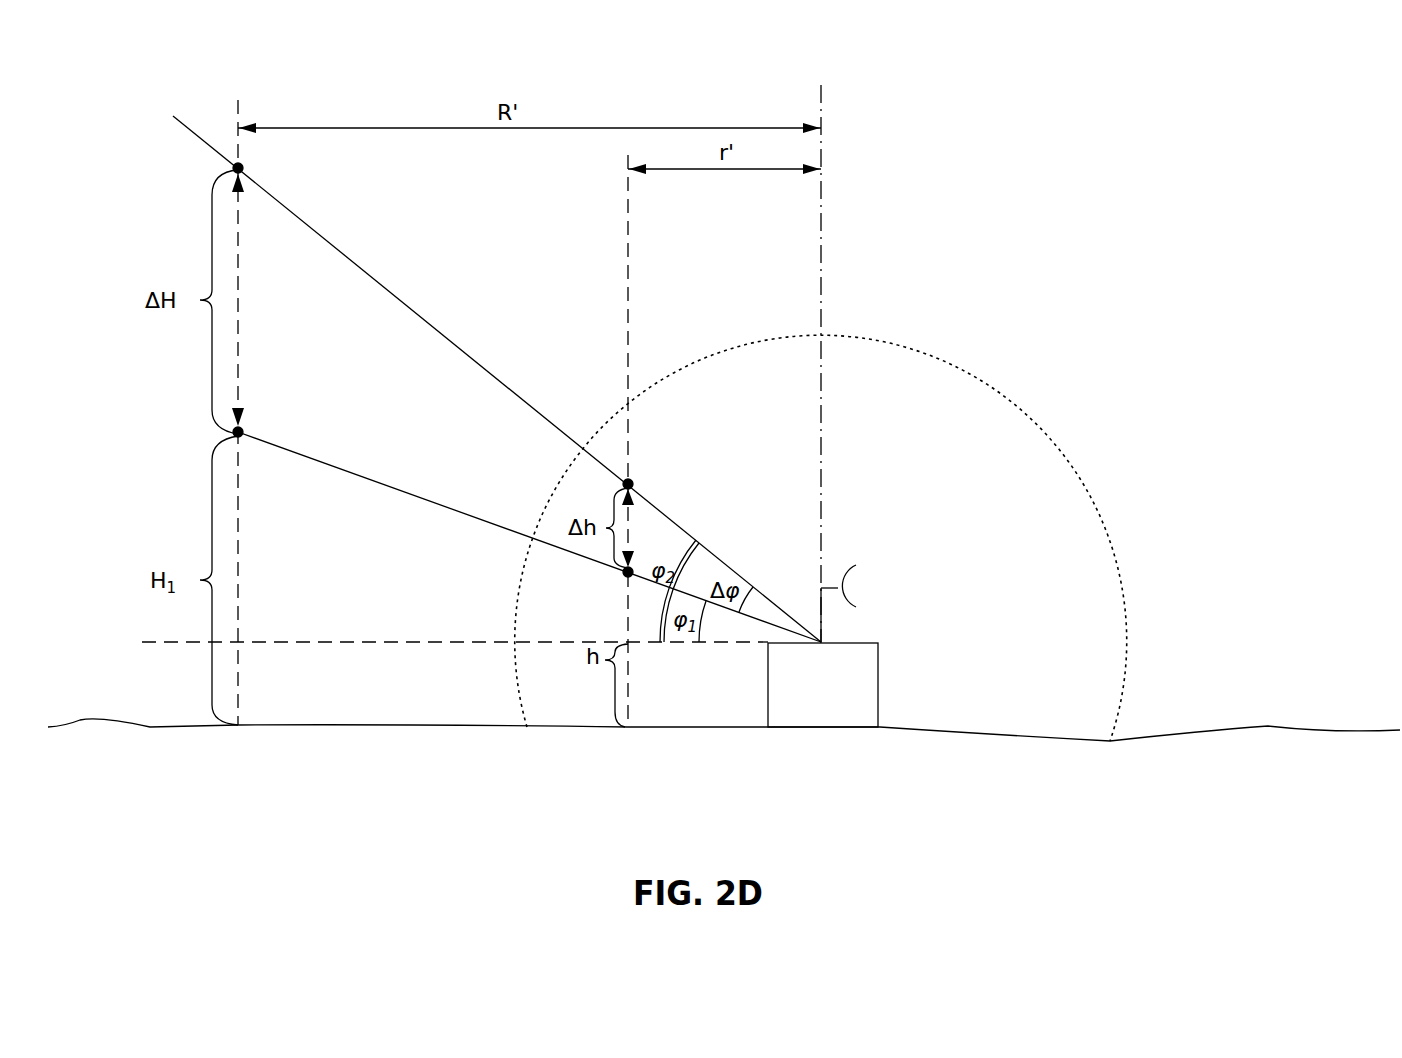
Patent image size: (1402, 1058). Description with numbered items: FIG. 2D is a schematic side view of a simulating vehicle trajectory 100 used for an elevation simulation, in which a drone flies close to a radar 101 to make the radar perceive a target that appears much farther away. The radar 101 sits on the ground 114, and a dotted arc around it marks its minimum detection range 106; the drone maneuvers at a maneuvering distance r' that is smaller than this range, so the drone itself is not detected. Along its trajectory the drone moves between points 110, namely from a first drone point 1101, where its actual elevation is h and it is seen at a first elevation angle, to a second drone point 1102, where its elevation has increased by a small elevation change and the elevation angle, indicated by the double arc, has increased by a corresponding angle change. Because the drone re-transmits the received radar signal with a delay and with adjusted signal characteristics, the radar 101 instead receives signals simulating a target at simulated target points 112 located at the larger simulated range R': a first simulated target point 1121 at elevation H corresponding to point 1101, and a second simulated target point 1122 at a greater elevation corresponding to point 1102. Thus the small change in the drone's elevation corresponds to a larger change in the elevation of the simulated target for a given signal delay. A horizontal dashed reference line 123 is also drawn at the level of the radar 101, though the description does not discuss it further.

The simulating vehicle trajectory 100 is at (1112, 168).
The radar 101 is at (879, 668).
The minimum detection range 106 is at (520, 582).
The points of the drone trajectory 110 is at (626, 531).
The first drone point 1101 is at (621, 576).
The second drone point 1102 is at (636, 484).
The simulated target points 112 is at (282, 292).
The first simulated target point 1121 is at (246, 432).
The second simulated target point 1122 is at (246, 168).
The ground 114 is at (1268, 726).
The horizontal reference line 123 is at (395, 640).